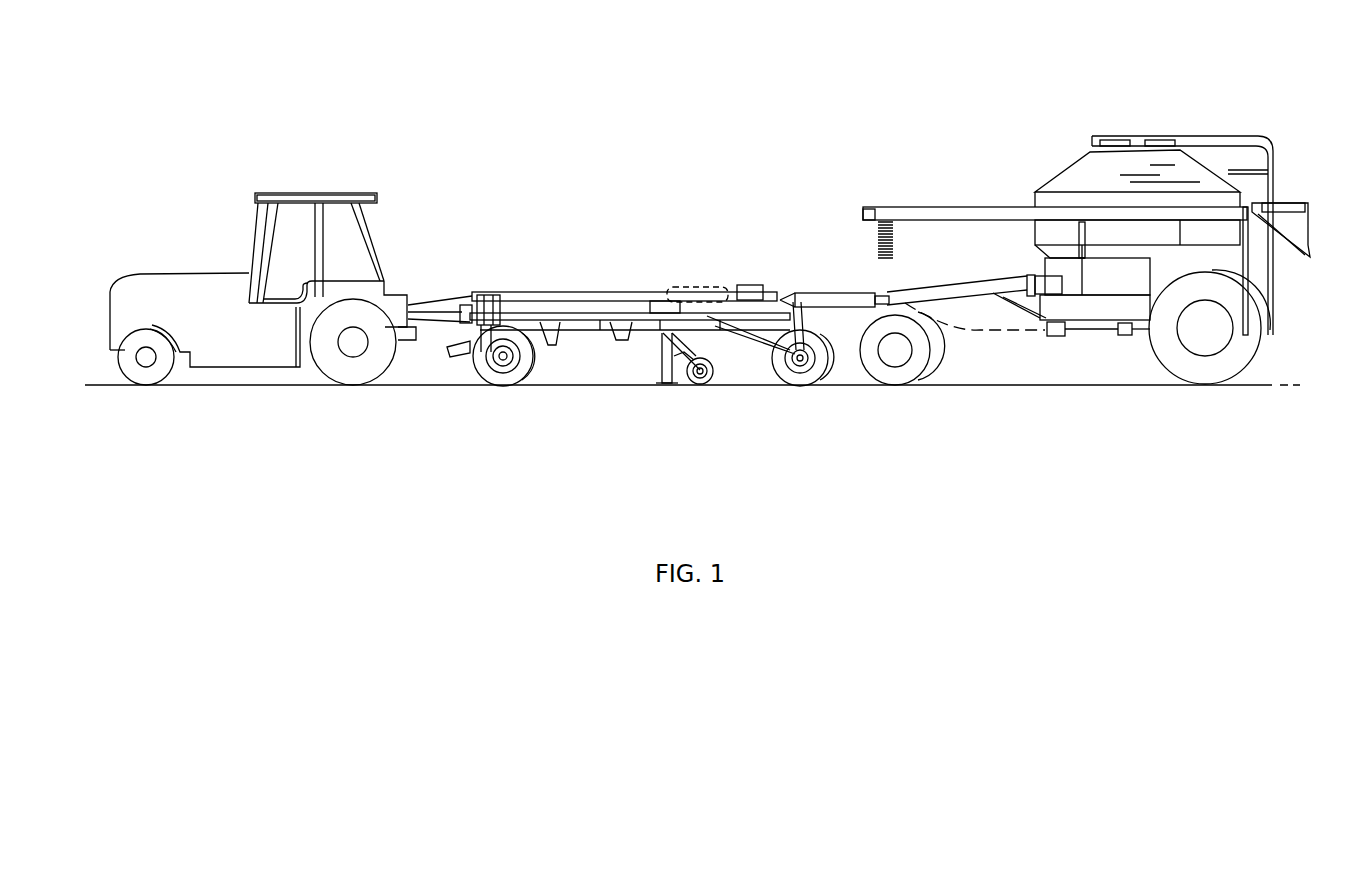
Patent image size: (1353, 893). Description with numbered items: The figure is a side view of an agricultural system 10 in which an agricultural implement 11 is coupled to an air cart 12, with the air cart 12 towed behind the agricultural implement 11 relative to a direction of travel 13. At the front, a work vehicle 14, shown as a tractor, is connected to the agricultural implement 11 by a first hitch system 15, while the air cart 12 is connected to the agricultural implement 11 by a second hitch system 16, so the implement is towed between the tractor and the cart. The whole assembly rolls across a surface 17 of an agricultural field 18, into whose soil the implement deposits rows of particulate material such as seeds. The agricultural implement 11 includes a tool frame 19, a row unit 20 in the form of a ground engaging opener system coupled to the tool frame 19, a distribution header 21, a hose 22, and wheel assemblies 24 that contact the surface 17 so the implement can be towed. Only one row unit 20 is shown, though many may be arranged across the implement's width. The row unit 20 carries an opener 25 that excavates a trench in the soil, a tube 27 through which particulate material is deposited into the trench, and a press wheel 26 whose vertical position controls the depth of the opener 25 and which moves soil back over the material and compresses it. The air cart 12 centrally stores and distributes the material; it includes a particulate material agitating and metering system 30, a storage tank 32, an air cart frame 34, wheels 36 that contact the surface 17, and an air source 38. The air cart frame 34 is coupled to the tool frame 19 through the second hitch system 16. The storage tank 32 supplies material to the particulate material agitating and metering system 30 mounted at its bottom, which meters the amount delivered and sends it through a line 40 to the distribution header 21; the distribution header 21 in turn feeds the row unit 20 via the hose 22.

The agricultural system 10 is at (1178, 68).
The agricultural implement 11 is at (545, 291).
The air cart 12 is at (1057, 134).
The direction of travel 13 is at (726, 193).
The work vehicle 14 is at (309, 178).
The first hitch system 15 is at (416, 292).
The second hitch system 16 is at (790, 298).
The surface 17 is at (1050, 388).
The agricultural field 18 is at (882, 491).
The tool frame 19 is at (647, 292).
The row unit 20 is at (655, 390).
The distribution header 21 is at (757, 285).
The hose 22 is at (705, 287).
The wheel assemblies 24 is at (497, 387).
The opener 25 is at (638, 369).
The press wheel 26 is at (718, 376).
The tube 27 is at (690, 388).
The particulate material agitating and metering system 30 is at (940, 355).
The storage tank 32 is at (1090, 170).
The air cart frame 34 is at (946, 287).
The wheels 36 is at (1203, 385).
The air source 38 is at (1253, 280).
The line 40 is at (985, 338).